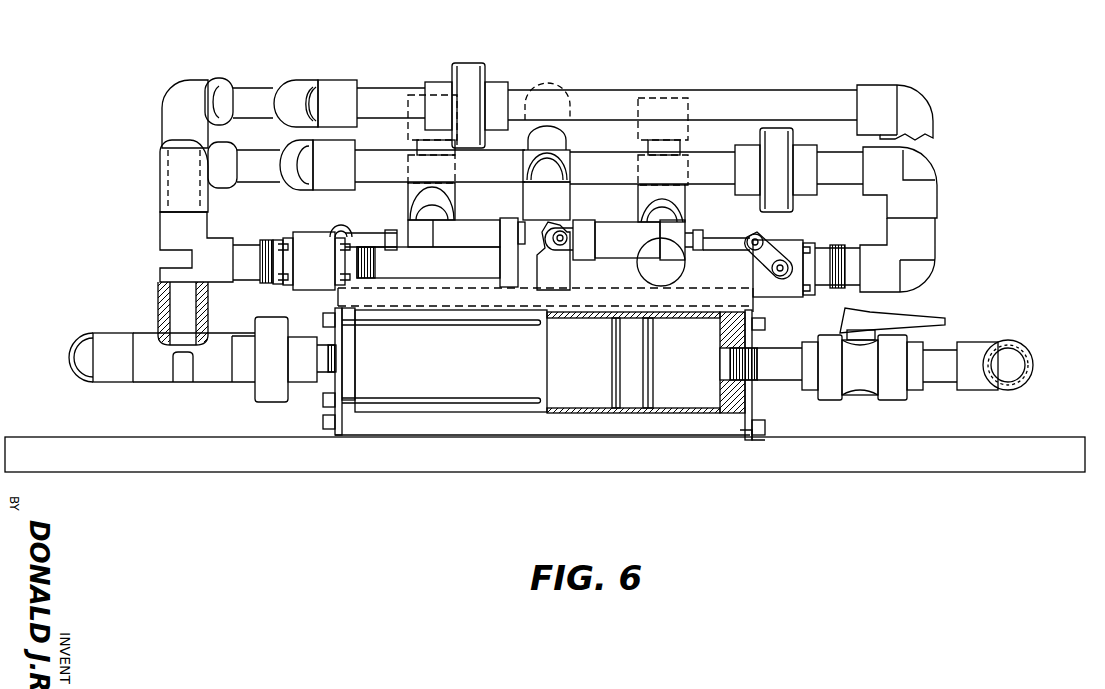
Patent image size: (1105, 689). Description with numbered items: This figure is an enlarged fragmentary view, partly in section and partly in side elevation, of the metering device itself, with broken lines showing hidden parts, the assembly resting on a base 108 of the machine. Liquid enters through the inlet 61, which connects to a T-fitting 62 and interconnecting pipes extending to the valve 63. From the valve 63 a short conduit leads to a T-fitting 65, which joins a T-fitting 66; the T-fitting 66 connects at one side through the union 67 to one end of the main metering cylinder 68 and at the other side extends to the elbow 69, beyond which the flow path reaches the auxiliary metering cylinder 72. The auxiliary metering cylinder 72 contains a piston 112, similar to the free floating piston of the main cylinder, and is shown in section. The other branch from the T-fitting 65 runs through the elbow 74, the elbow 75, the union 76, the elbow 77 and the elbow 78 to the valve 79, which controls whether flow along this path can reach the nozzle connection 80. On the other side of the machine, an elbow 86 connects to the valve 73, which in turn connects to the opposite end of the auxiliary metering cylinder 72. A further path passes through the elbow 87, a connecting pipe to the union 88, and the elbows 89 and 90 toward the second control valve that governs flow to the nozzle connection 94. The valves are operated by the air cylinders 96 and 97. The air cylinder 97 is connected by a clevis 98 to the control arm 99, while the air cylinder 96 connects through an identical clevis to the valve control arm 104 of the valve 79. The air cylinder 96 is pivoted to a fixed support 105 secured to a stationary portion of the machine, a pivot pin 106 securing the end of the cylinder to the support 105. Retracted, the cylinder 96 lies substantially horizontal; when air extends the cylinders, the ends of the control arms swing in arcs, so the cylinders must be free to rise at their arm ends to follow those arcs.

The inlet 61 is at (572, 136).
The T-fitting 62 is at (510, 280).
The valve 63 is at (313, 232).
The T-fitting 65 is at (170, 257).
The T-fitting 66 is at (163, 375).
The union 67 is at (272, 392).
The main metering cylinder 68 is at (437, 373).
The elbow 69 is at (85, 365).
The auxiliary metering cylinder 72 is at (590, 413).
The valve 73 is at (862, 388).
The elbow 74 is at (178, 162).
The elbow 75 is at (300, 190).
The union 76 is at (779, 128).
The elbow 77 is at (924, 165).
The elbow 78 is at (925, 235).
The valve 79 is at (795, 235).
The nozzle connection 80 is at (688, 135).
The elbow 86 is at (1006, 392).
The elbow 87 is at (913, 102).
The union 88 is at (472, 68).
The elbow 89 is at (305, 92).
The elbow 90 is at (190, 80).
The nozzle connection 94 is at (410, 134).
The air cylinder 96 is at (613, 230).
The air cylinder 97 is at (478, 228).
The clevis 98 is at (386, 232).
The control arm 99 is at (345, 226).
The valve control arm 104 is at (752, 235).
The fixed support 105 is at (566, 270).
The pivot pin 106 is at (564, 234).
The base 108 is at (1045, 440).
The piston 112 is at (632, 360).